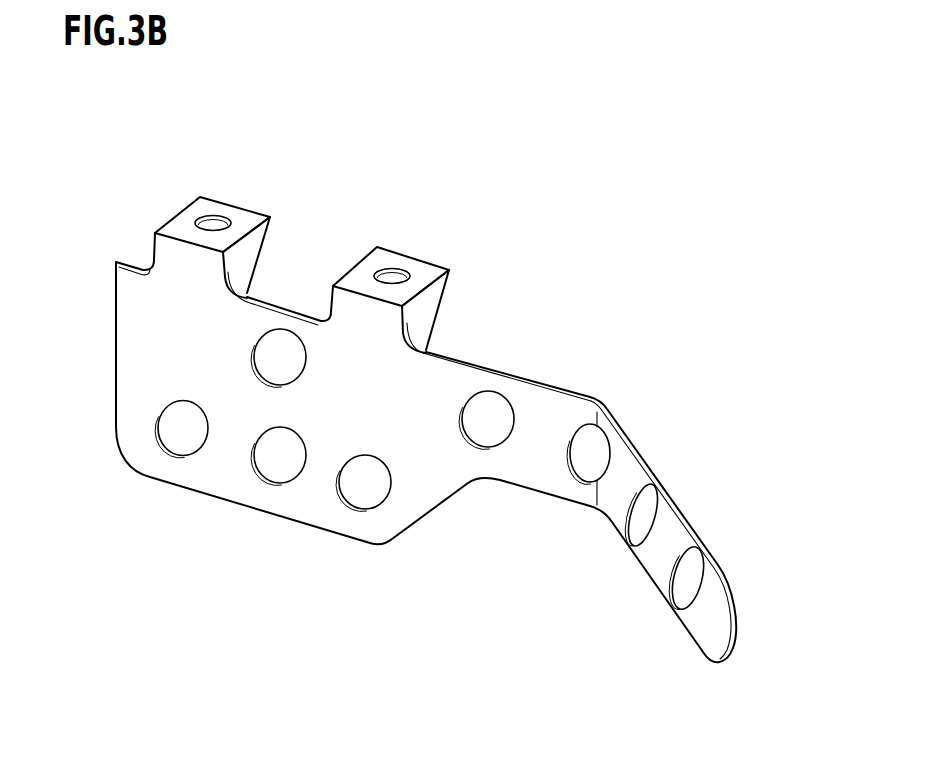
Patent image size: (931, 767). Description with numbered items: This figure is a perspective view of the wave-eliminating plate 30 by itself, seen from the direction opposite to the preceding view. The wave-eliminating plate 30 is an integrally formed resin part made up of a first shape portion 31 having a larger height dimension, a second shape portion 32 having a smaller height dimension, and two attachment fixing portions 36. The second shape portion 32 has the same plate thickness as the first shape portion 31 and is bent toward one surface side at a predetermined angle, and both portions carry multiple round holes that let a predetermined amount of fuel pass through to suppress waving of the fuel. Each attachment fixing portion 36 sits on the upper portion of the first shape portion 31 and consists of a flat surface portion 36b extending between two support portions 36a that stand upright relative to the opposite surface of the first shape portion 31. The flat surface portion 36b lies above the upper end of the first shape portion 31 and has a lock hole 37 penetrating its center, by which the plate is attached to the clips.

The wave-eliminating plate 30 is at (426, 392).
The first shape portion 31 is at (252, 522).
The second shape portion 32 is at (646, 587).
The attachment fixing portion 36 is at (318, 238).
The support portion 36a is at (247, 254).
The flat surface portion 36b is at (180, 230).
The lock hole 37 is at (217, 227).